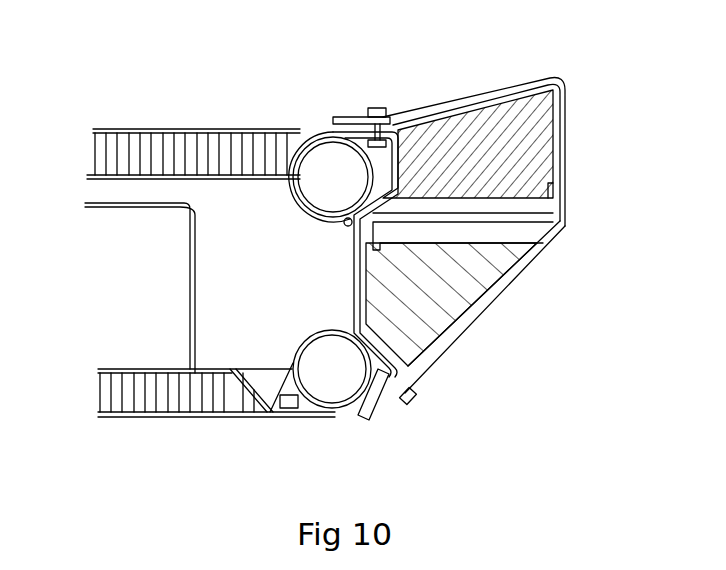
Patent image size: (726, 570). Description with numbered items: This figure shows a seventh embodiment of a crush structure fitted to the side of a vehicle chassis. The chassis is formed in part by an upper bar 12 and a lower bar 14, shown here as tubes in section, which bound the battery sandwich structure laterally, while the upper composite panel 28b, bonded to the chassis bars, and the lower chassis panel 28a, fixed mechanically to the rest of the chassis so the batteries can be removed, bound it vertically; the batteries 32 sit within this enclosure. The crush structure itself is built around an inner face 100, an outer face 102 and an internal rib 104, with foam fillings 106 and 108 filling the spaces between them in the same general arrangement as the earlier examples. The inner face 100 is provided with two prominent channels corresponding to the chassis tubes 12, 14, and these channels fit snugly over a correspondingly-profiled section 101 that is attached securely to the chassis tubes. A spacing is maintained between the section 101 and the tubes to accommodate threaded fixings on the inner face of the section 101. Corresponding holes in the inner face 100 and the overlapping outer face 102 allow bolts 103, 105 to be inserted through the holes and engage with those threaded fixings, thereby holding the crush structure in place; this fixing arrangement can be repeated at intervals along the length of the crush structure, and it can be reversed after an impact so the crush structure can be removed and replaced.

The upper bar 12 is at (334, 168).
The lower bar 14 is at (332, 385).
The lower chassis panel 28a is at (200, 400).
The upper composite panel 28b is at (232, 147).
The batteries 32 is at (140, 313).
The inner face 100 is at (448, 333).
The correspondingly-profiled section 101 is at (352, 422).
The outer face 102 is at (478, 312).
The bolt 103 is at (376, 106).
The internal rib 104 is at (497, 212).
The bolt 105 is at (410, 403).
The foam filling 106 is at (520, 118).
The foam filling 108 is at (470, 270).